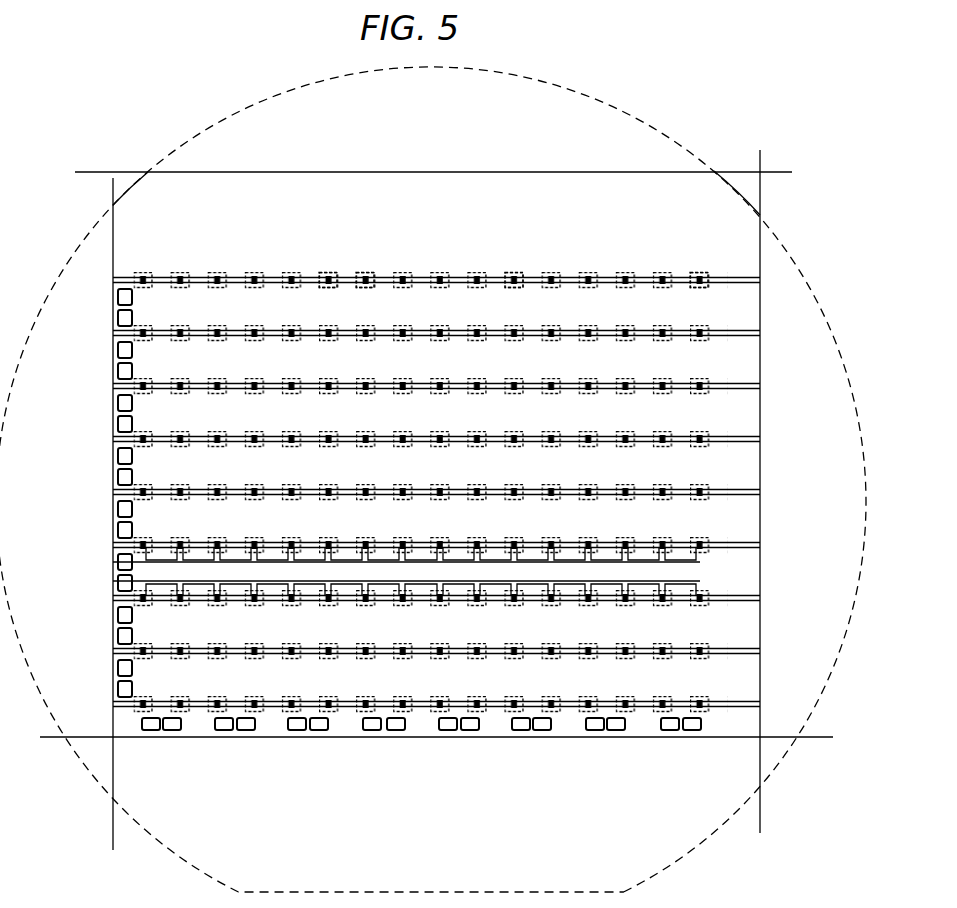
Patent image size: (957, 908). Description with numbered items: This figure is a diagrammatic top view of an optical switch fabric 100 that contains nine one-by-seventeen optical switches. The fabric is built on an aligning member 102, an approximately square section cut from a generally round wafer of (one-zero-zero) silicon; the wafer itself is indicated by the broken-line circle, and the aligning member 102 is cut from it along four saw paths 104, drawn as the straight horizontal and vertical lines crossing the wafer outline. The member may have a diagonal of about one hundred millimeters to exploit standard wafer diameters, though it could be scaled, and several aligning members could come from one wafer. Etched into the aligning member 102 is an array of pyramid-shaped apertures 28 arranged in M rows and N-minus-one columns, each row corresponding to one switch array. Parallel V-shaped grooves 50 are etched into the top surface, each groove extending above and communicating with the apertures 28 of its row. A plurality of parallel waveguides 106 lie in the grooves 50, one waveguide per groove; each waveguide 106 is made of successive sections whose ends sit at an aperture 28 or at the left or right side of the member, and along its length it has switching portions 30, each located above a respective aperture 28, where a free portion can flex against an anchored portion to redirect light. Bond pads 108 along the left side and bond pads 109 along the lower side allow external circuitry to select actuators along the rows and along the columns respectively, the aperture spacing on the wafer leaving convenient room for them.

The optical switch fabric 100 is at (327, 157).
The aligning member 102 is at (472, 176).
The saw paths 104 is at (112, 195).
The waveguides 106 is at (745, 330).
The pyramid-shaped apertures 28 is at (145, 270).
The switching portions 30 is at (327, 270).
The V-shaped grooves 50 is at (747, 647).
The bond pads 108 is at (114, 423).
The bond pads 109 is at (246, 732).